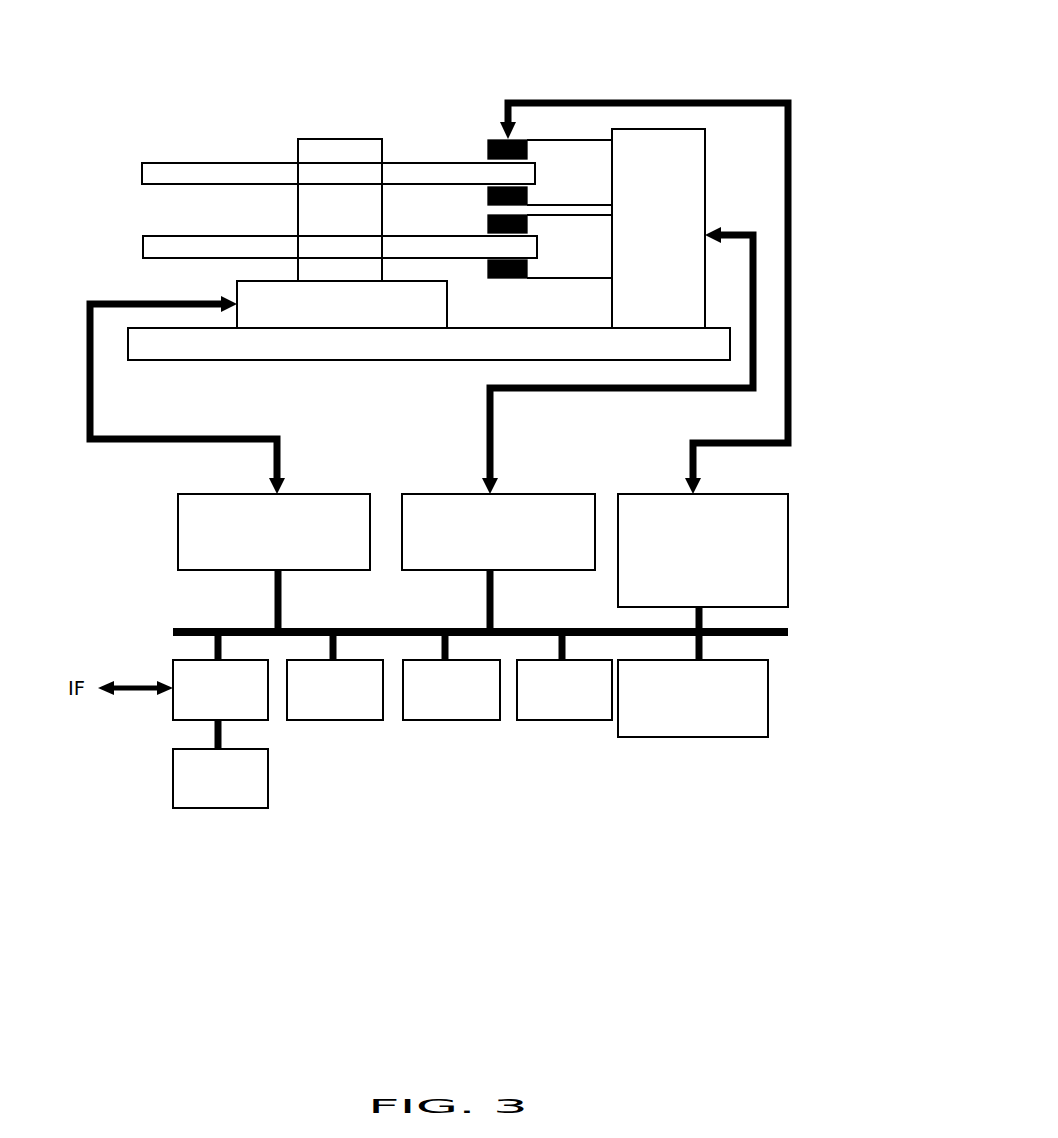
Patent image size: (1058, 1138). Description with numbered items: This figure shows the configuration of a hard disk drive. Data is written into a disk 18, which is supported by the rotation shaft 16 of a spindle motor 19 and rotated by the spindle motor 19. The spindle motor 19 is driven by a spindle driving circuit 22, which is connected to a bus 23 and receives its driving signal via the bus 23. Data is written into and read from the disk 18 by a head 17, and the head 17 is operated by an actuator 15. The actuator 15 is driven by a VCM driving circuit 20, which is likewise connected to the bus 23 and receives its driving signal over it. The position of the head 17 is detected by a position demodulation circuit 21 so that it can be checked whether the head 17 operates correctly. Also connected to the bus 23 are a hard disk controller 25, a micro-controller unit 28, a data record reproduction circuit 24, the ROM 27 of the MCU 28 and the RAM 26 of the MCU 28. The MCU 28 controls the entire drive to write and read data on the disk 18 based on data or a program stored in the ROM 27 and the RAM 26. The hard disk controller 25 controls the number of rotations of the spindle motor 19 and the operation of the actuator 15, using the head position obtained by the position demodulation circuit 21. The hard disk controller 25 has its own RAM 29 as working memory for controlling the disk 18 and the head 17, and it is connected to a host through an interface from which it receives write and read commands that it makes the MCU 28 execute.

The actuator 15 is at (650, 129).
The rotation shaft 16 is at (315, 138).
The head 17 is at (480, 268).
The disk 18 is at (140, 232).
The spindle motor 19 is at (333, 303).
The VCM driving circuit 20 is at (428, 493).
The position demodulation circuit 21 is at (722, 494).
The spindle driving circuit 22 is at (178, 520).
The bus 23 is at (173, 618).
The data record reproduction circuit 24 is at (770, 715).
The hard disk controller 25 is at (197, 722).
The RAM of the MCU 26 is at (307, 723).
The ROM of the MCU 27 is at (448, 722).
The micro-controller unit 28 is at (562, 722).
The RAM for the hard disk controller 29 is at (217, 810).